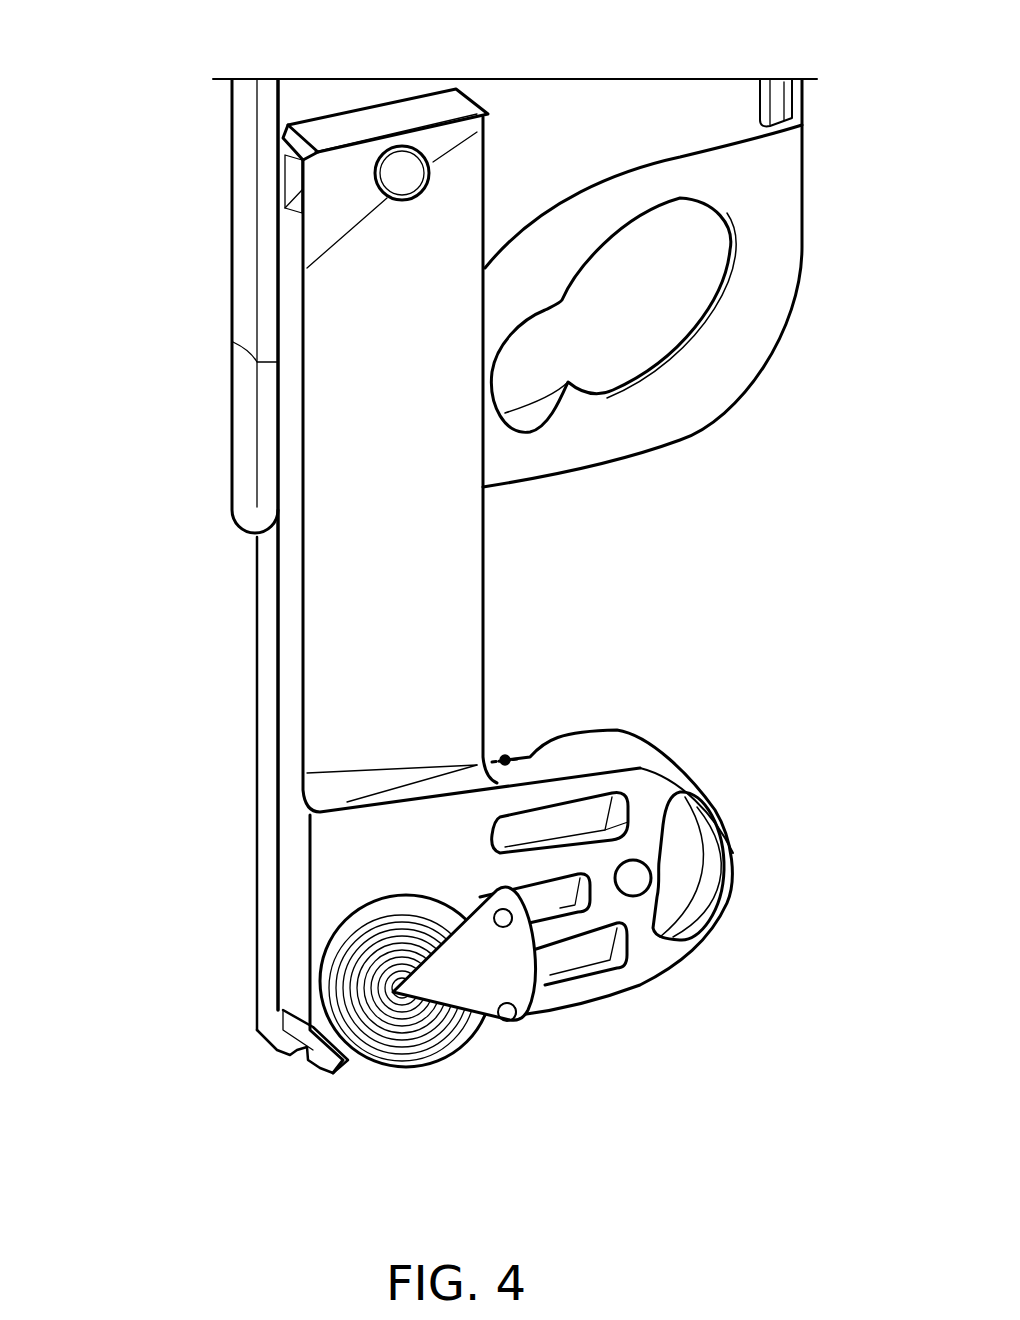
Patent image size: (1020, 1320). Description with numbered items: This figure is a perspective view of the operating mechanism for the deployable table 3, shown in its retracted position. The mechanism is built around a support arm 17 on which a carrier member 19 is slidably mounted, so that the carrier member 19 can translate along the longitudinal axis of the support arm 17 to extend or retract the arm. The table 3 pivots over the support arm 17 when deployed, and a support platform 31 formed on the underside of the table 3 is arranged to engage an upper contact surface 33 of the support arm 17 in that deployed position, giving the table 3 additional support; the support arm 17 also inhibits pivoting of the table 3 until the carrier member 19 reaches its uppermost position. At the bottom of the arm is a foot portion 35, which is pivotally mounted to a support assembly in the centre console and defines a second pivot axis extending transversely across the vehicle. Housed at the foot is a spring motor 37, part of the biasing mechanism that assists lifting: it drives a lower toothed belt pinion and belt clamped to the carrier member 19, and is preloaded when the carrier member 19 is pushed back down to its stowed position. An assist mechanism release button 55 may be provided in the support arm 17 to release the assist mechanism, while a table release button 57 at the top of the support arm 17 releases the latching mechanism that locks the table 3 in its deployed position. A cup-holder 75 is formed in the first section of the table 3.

The table 3 is at (226, 282).
The support arm 17 is at (435, 637).
The carrier member 19 is at (265, 685).
The support platform 31 is at (274, 508).
The upper contact surface 33 is at (417, 112).
The foot portion 35 is at (748, 900).
The spring motor 37 is at (404, 1043).
The assist mechanism release button 55 is at (505, 760).
The table release button 57 is at (405, 178).
The cup-holder 75 is at (728, 345).